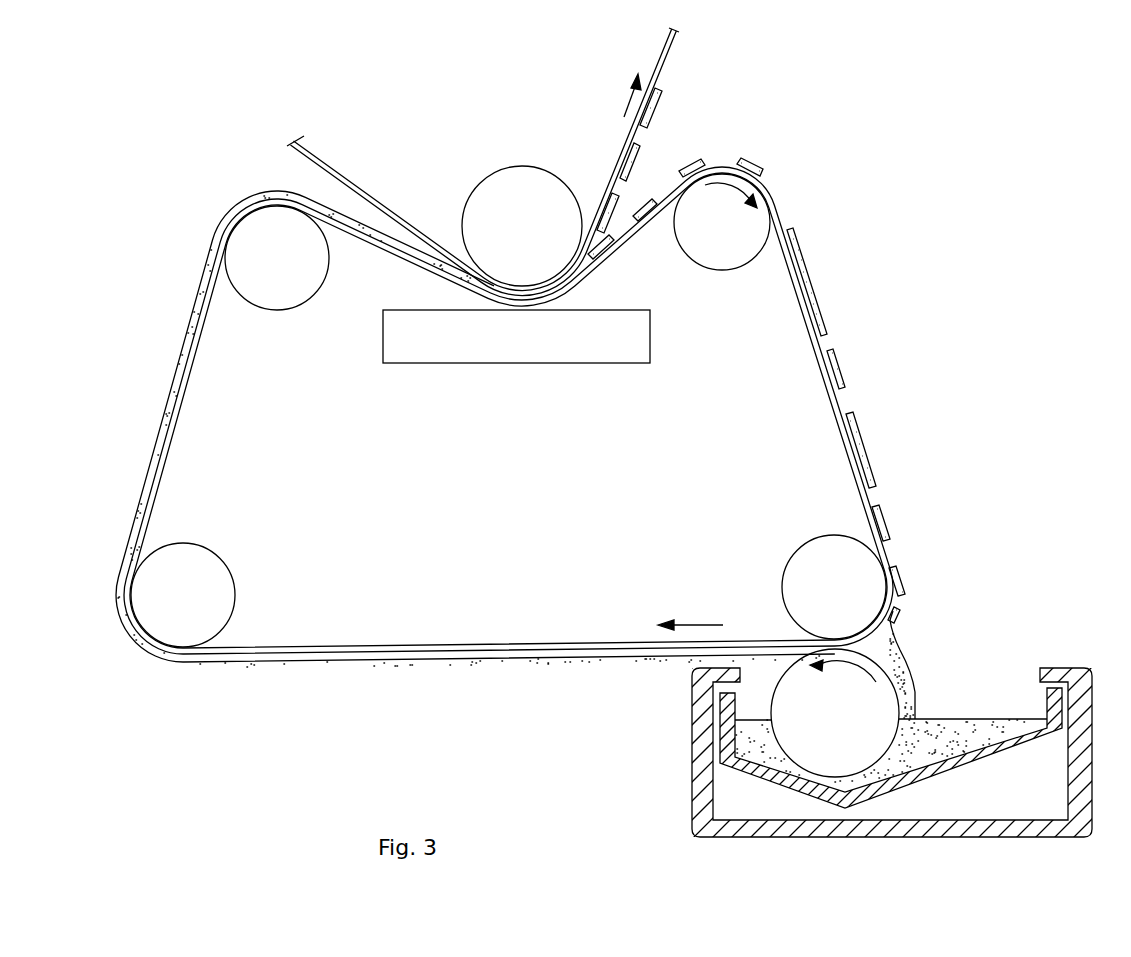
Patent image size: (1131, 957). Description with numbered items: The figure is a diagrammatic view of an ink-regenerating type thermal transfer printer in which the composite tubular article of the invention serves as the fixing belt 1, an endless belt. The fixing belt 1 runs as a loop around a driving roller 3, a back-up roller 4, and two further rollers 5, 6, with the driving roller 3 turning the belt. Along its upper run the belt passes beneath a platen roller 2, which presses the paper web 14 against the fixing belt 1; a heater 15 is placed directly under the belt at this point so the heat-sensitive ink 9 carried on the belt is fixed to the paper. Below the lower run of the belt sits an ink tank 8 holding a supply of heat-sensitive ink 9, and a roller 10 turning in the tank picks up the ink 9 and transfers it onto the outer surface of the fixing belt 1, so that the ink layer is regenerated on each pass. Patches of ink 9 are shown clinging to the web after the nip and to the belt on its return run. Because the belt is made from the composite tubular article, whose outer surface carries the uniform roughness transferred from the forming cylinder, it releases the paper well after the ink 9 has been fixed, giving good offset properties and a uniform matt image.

The fixing belt 1 is at (357, 643).
The platen roller 2 is at (547, 177).
The driving roller 3 is at (728, 252).
The back-up roller 4 is at (823, 552).
The roller 5 is at (217, 578).
The roller 6 is at (290, 288).
The ink tank 8 is at (1057, 697).
The heat-sensitive ink 9 is at (668, 100).
The roller 10 is at (822, 760).
The web 14 is at (387, 210).
The heater 15 is at (590, 348).